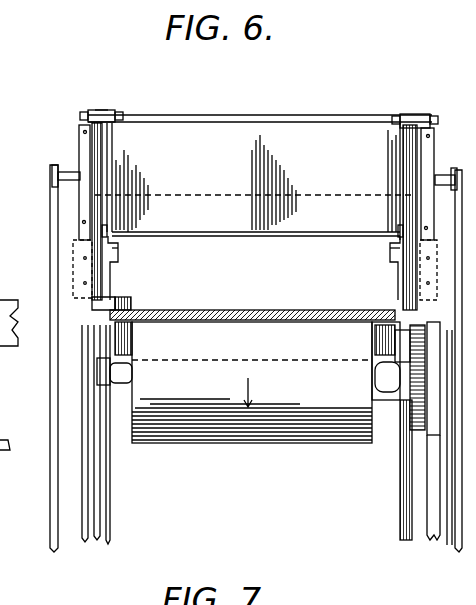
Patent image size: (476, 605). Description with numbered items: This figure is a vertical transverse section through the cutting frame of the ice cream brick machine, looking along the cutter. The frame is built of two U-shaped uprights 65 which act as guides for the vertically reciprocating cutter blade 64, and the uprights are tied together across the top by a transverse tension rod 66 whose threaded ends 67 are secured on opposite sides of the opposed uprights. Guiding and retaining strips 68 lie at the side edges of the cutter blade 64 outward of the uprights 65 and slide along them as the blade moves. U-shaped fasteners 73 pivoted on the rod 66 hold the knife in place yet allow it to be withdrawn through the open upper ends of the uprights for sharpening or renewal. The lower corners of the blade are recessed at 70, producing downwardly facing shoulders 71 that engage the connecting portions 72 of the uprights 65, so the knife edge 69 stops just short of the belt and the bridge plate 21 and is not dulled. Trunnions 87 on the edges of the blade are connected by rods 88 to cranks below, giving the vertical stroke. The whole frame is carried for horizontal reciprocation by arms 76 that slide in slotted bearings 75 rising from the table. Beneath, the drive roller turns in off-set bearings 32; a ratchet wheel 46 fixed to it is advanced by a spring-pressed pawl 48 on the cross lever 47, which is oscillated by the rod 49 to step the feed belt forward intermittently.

The bridge plate 21 is at (274, 296).
The bearings 32 is at (385, 385).
The ratchet wheel 46 is at (403, 353).
The cross lever 47 is at (432, 432).
The spring-pressed pawl 48 is at (422, 337).
The rod 49 is at (433, 542).
The cutter blade 64 is at (255, 181).
The uprights 65 is at (406, 157).
The transverse tension rod 66 is at (245, 115).
The threaded ends 67 is at (120, 112).
The guiding and retaining strips 68 is at (84, 140).
The knife edge 69 is at (195, 240).
The recessed lower corners 70 is at (113, 233).
The downwardly facing shoulders 71 is at (73, 240).
The connecting portions 72 is at (103, 300).
The U-shaped fasteners 73 is at (412, 120).
The slotted bearings 75 is at (112, 264).
The arms 76 is at (120, 249).
The trunnions 87 is at (52, 175).
The rods 88 is at (50, 472).